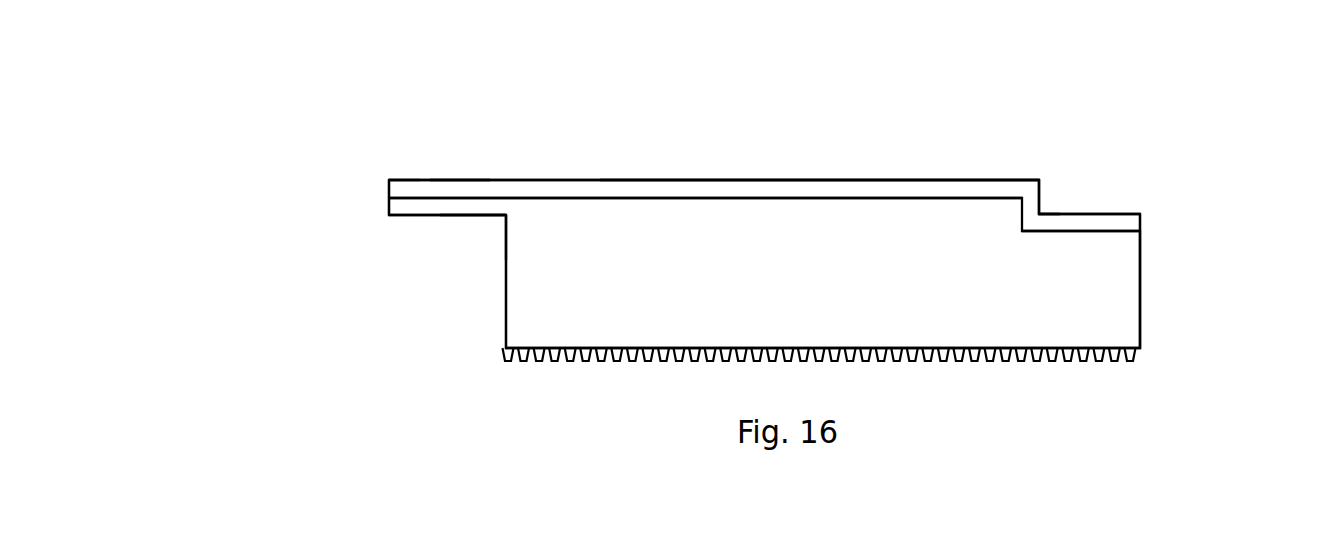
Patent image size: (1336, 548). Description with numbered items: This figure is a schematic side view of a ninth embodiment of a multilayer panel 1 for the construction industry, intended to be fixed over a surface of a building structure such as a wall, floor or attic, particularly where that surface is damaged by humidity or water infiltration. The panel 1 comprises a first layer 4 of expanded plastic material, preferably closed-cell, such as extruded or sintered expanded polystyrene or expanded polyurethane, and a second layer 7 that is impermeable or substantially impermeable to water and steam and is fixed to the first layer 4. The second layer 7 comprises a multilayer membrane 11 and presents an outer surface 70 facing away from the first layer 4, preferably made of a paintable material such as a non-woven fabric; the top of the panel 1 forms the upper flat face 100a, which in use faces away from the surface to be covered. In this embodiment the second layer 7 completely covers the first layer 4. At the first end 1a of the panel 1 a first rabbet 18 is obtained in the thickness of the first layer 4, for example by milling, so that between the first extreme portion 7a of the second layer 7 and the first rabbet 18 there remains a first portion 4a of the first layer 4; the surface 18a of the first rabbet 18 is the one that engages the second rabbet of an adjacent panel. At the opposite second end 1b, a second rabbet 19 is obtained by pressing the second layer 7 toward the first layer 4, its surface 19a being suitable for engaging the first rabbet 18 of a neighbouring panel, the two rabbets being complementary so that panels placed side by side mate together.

The multilayer panel 1 is at (863, 128).
The first end 1a is at (380, 204).
The second end 1b is at (1140, 285).
The first layer 4 is at (1107, 328).
The first portion of the first layer 4a is at (415, 207).
The second layer 7 is at (688, 193).
The first extreme portion of the second layer 7a is at (407, 178).
The multilayer membrane 11 is at (583, 193).
The first rabbet 18 is at (497, 217).
The surface of the first rabbet 18a is at (460, 217).
The second rabbet 19 is at (1120, 215).
The surface of the second rabbet 19a is at (1075, 215).
The outer surface 70 is at (832, 180).
The upper flat face 100a is at (458, 185).